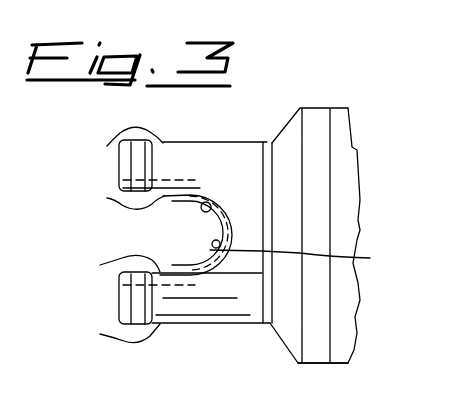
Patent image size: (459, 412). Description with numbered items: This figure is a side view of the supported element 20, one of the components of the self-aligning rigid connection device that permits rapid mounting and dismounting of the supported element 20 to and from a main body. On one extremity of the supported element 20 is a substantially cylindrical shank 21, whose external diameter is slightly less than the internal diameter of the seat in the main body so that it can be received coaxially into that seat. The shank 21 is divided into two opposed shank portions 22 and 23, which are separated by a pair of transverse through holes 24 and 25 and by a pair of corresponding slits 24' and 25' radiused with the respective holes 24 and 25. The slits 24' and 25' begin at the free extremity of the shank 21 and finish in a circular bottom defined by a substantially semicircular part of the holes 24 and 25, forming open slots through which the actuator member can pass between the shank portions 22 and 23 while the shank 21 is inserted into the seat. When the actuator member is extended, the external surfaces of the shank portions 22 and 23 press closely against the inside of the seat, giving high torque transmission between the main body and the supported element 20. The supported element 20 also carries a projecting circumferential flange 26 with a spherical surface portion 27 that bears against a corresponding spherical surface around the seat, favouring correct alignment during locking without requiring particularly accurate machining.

The supported element 20 is at (347, 200).
The shank 21 is at (200, 328).
The shank portion 22 is at (118, 134).
The shank portion 23 is at (124, 342).
The transverse through hole 24 is at (312, 260).
The slit 24' is at (100, 286).
The transverse through hole 25 is at (207, 187).
The slit 25' is at (105, 168).
The projecting circumferential flange 26 is at (315, 353).
The spherical surface portion 27 is at (300, 108).